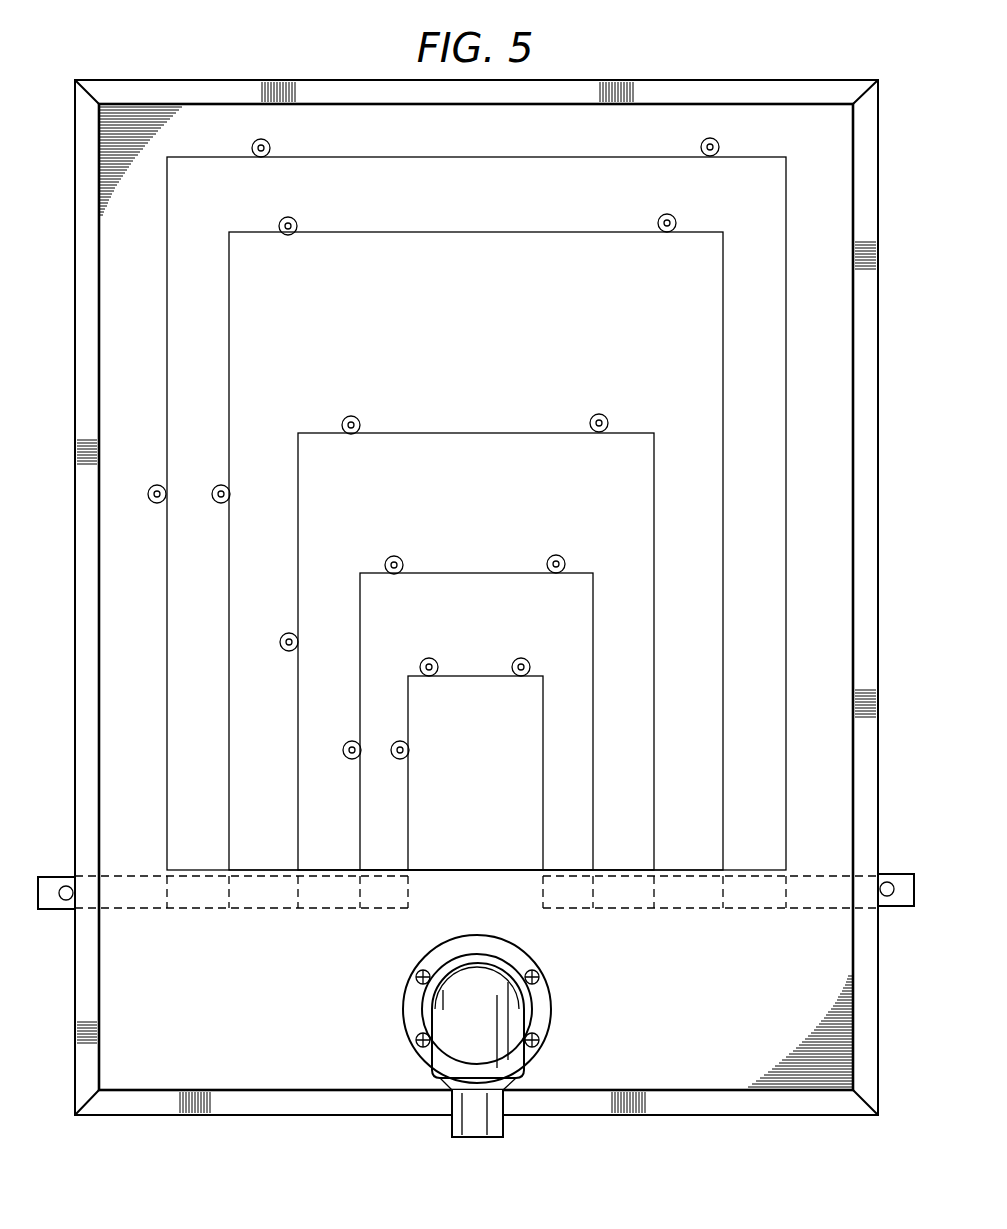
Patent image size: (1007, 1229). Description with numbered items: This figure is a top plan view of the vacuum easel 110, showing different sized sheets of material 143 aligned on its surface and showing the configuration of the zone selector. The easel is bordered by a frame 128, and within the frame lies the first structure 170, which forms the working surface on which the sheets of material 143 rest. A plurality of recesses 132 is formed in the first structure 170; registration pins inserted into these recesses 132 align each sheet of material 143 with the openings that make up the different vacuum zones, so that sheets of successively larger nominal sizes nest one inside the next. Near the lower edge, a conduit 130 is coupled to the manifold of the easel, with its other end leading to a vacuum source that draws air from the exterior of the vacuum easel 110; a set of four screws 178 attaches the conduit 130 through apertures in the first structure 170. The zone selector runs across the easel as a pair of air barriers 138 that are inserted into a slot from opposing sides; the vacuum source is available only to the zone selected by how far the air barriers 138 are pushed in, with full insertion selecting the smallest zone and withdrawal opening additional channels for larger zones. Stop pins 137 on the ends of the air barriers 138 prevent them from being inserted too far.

The vacuum easel 110 is at (497, 586).
The frame 128 is at (748, 1116).
The conduit 130 is at (479, 1140).
The recesses 132 is at (282, 634).
The stop pins 137 is at (58, 882).
The air barriers 138 is at (56, 910).
The sheets of material 143 is at (698, 238).
The first structure 170 is at (694, 1006).
The screws 178 is at (538, 968).